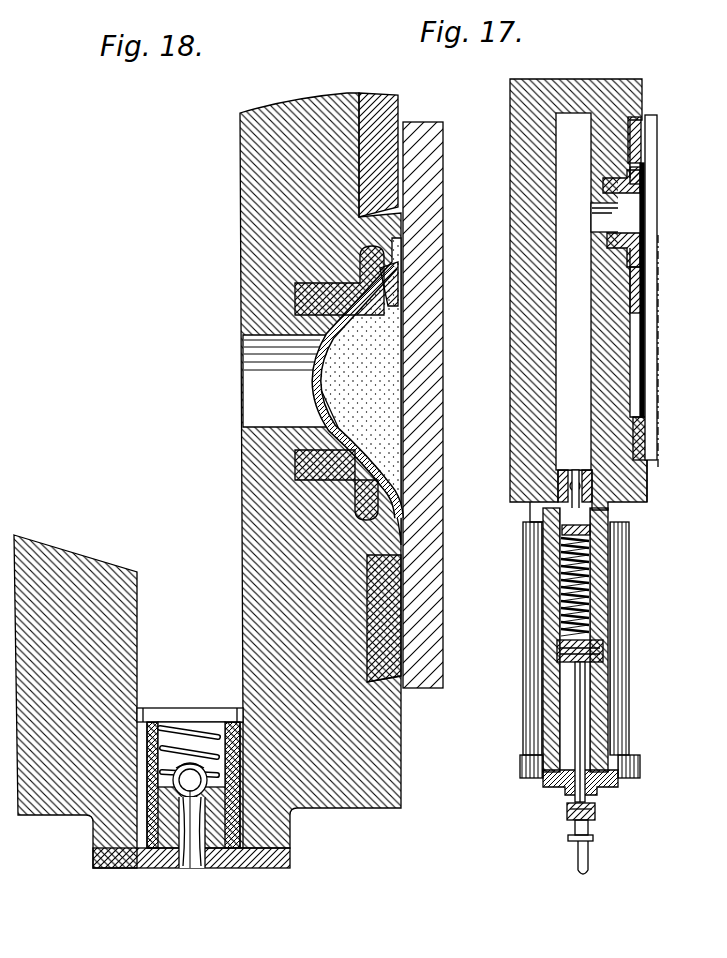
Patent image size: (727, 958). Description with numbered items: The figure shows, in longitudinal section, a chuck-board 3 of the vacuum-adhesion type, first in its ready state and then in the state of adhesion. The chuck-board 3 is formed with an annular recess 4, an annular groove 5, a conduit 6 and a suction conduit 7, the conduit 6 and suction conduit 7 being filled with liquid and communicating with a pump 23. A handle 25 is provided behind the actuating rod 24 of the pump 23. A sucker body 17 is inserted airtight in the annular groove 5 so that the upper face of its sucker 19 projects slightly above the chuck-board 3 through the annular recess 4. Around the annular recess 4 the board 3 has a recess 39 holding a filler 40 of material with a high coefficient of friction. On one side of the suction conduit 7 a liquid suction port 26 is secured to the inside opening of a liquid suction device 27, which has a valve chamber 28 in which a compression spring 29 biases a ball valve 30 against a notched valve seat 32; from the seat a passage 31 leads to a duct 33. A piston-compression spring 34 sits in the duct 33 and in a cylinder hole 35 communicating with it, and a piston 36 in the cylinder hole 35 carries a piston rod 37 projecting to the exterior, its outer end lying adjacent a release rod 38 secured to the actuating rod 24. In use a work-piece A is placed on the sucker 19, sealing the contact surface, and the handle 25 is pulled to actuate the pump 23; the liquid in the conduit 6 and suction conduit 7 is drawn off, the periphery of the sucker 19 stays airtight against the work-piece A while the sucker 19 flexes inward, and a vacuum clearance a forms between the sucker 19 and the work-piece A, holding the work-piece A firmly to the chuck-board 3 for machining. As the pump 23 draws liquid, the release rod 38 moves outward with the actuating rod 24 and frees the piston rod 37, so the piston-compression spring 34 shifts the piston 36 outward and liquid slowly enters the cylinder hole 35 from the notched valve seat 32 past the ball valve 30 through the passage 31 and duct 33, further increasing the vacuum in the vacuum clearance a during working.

In FIG. 18, the chuck-board 3 is at (262, 246).
In FIG. 17, the chuck-board 3 is at (577, 92).
In FIG. 18, the annular recess 4 is at (383, 244).
In FIG. 17, the annular recess 4 is at (637, 168).
In FIG. 18, the annular groove 5 is at (302, 484).
In FIG. 17, the annular groove 5 is at (608, 250).
In FIG. 18, the conduit 6 is at (262, 388).
In FIG. 17, the conduit 6 is at (591, 220).
In FIG. 18, the suction conduit 7 is at (163, 588).
In FIG. 17, the suction conduit 7 is at (557, 133).
In FIG. 18, the sucker body 17 is at (299, 298).
In FIG. 17, the sucker body 17 is at (607, 186).
In FIG. 18, the sucker 19 is at (390, 306).
In FIG. 17, the sucker 19 is at (645, 203).
In FIG. 17, the pump 23 is at (618, 622).
In FIG. 17, the actuating rod 24 is at (590, 828).
In FIG. 17, the handle 25 is at (582, 858).
In FIG. 18, the liquid suction port 26 is at (162, 722).
In FIG. 17, the liquid suction port 26 is at (571, 470).
In FIG. 18, the liquid suction device 27 is at (227, 845).
In FIG. 17, the liquid suction device 27 is at (600, 665).
In FIG. 18, the valve chamber 28 is at (160, 760).
In FIG. 17, the valve chamber 28 is at (560, 478).
In FIG. 18, the compression spring 29 is at (216, 722).
In FIG. 17, the compression spring 29 is at (566, 472).
In FIG. 18, the ball valve 30 is at (192, 858).
In FIG. 17, the ball valve 30 is at (600, 505).
In FIG. 18, the passage 31 is at (198, 870).
In FIG. 17, the passage 31 is at (540, 516).
In FIG. 18, the notched valve seat 32 is at (152, 866).
In FIG. 17, the notched valve seat 32 is at (548, 500).
In FIG. 17, the duct 33 is at (586, 562).
In FIG. 17, the piston-compression spring 34 is at (565, 565).
In FIG. 17, the cylinder hole 35 is at (562, 700).
In FIG. 17, the piston 36 is at (550, 655).
In FIG. 17, the piston rod 37 is at (577, 732).
In FIG. 17, the release rod 38 is at (595, 811).
In FIG. 18, the recess 39 is at (383, 692).
In FIG. 17, the recess 39 is at (641, 460).
In FIG. 18, the filler 40 is at (388, 113).
In FIG. 17, the filler 40 is at (633, 118).
In FIG. 18, the work-piece A is at (430, 387).
In FIG. 17, the work-piece A is at (655, 270).
In FIG. 18, the vacuum clearance a is at (385, 402).